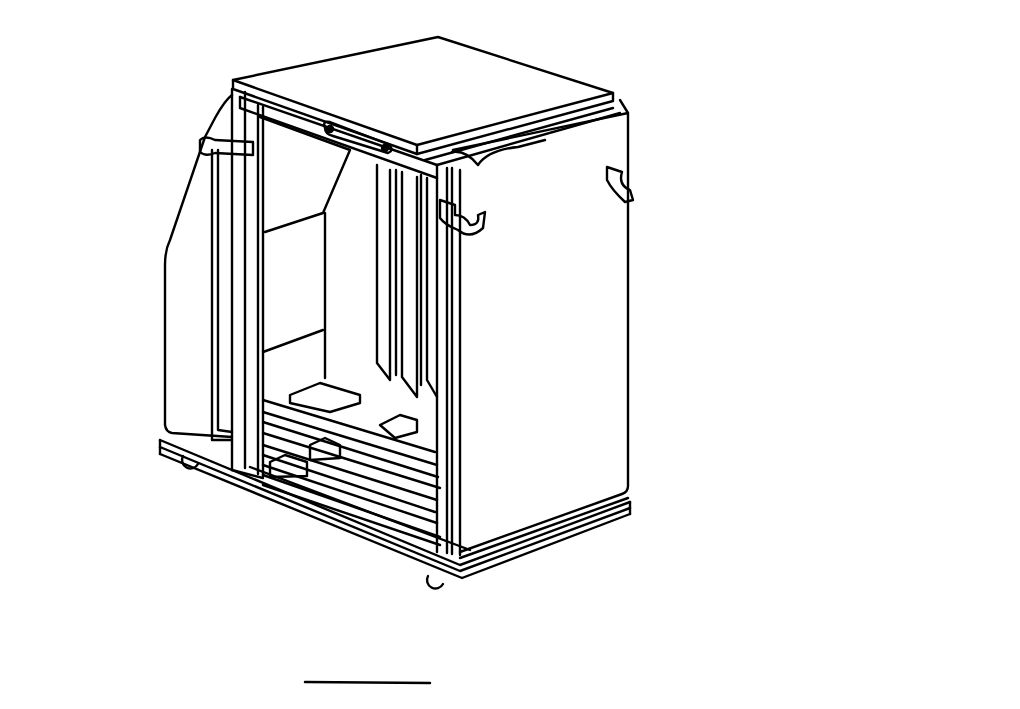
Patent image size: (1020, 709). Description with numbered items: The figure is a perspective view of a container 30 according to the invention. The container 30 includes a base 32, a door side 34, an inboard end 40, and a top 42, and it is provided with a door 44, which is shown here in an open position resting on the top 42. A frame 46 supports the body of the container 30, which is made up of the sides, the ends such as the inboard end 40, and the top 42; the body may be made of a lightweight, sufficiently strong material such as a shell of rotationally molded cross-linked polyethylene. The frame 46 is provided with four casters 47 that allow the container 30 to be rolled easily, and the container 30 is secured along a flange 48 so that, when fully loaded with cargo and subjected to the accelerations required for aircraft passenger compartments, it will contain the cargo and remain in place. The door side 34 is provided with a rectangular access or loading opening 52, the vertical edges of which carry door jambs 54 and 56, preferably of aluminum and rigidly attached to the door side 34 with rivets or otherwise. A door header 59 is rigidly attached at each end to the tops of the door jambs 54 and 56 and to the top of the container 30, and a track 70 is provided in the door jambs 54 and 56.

The container 30 is at (712, 104).
The base 32 is at (540, 533).
The door side 34 is at (190, 273).
The inboard end 40 is at (587, 333).
The top 42 is at (623, 108).
The door 44 is at (487, 82).
The frame 46 is at (370, 520).
The casters 47 is at (183, 467).
The flange 48 is at (623, 520).
The access or loading opening 52 is at (303, 143).
The door jamb 54 is at (433, 535).
The door jamb 56 is at (233, 465).
The door header 59 is at (290, 110).
The track 70 is at (260, 477).